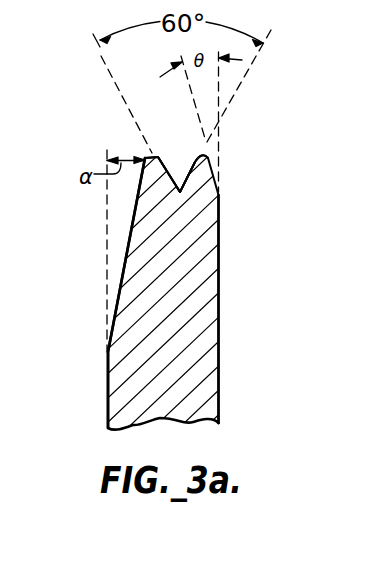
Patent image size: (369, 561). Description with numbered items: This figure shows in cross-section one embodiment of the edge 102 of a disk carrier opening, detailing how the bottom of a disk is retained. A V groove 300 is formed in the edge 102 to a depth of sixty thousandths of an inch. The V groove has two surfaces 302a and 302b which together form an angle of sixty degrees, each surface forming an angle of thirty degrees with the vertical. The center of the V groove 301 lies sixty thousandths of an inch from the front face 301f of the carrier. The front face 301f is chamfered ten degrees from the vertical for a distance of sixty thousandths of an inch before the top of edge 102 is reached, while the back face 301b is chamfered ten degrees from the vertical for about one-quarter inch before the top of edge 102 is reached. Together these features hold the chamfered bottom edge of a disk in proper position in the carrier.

The V groove 300 is at (178, 173).
The V groove surface 302b is at (163, 160).
The V groove surface 302a is at (191, 162).
The edge 102 is at (149, 157).
The V groove center 301 is at (180, 193).
The back face 301b is at (108, 386).
The front face 301f is at (219, 387).